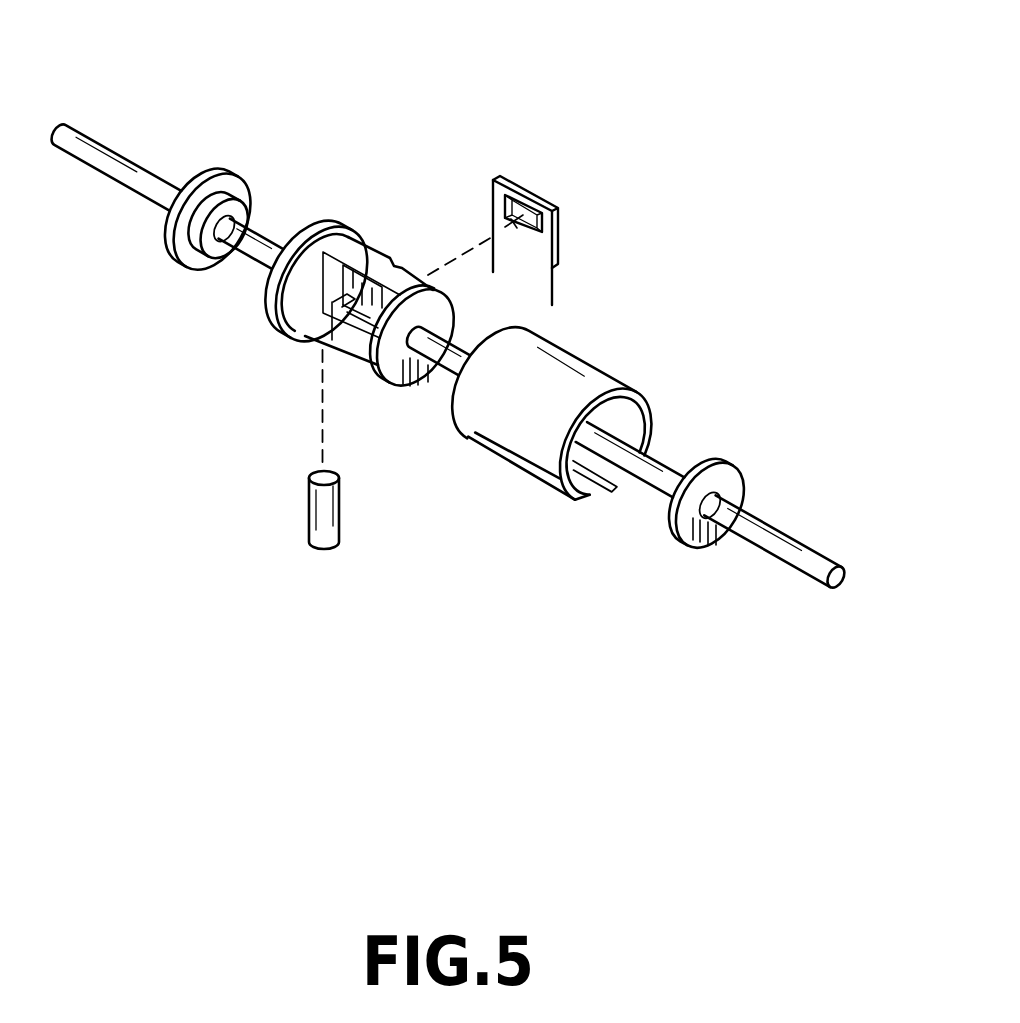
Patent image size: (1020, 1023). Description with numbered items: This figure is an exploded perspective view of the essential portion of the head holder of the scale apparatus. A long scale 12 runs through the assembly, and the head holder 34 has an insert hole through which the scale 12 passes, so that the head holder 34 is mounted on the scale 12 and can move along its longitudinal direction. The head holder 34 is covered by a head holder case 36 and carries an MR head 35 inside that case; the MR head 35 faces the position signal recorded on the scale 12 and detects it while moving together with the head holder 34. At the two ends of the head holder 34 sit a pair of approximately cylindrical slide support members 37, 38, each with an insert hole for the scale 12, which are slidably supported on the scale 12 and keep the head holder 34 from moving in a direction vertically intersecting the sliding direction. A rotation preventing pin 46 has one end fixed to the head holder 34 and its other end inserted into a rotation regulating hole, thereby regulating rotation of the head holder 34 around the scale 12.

The scale 12 is at (782, 562).
The head holder 34 is at (352, 218).
The MR head 35 is at (523, 187).
The head holder case 36 is at (590, 352).
The slide support member 37 is at (725, 455).
The slide support member 38 is at (243, 172).
The rotation preventing pin 46 is at (325, 547).